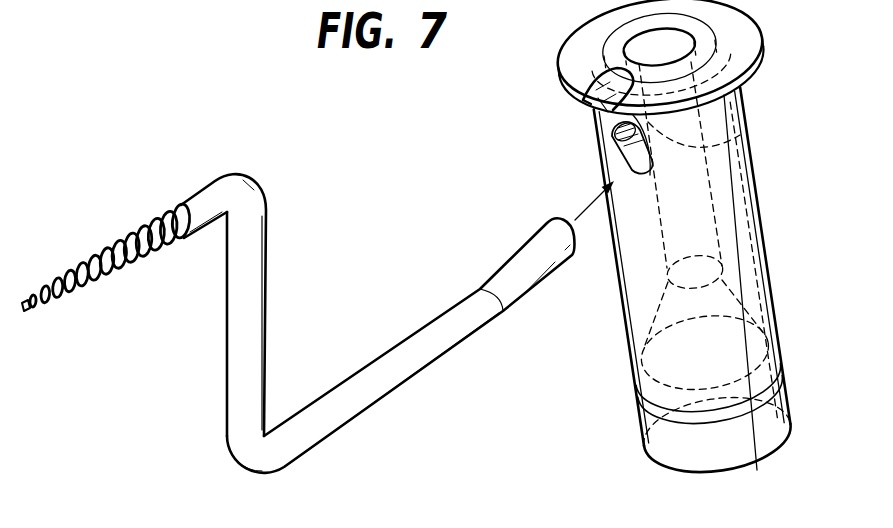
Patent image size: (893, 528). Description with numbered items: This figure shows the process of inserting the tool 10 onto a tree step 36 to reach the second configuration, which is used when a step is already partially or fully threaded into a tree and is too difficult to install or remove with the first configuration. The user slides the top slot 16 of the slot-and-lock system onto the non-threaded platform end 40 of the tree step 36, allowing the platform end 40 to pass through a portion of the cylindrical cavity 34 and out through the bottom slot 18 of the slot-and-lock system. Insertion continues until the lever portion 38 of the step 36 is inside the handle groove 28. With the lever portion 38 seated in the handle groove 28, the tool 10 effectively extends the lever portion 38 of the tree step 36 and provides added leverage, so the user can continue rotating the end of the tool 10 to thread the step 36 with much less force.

The tool 10 is at (685, 240).
The top slot 16 is at (636, 150).
The bottom slot 18 is at (748, 72).
The handle groove 28 is at (590, 96).
The cylindrical cavity 34 is at (750, 138).
The tree step 36 is at (298, 323).
The lever portion 38 is at (247, 352).
The platform end 40 is at (405, 353).